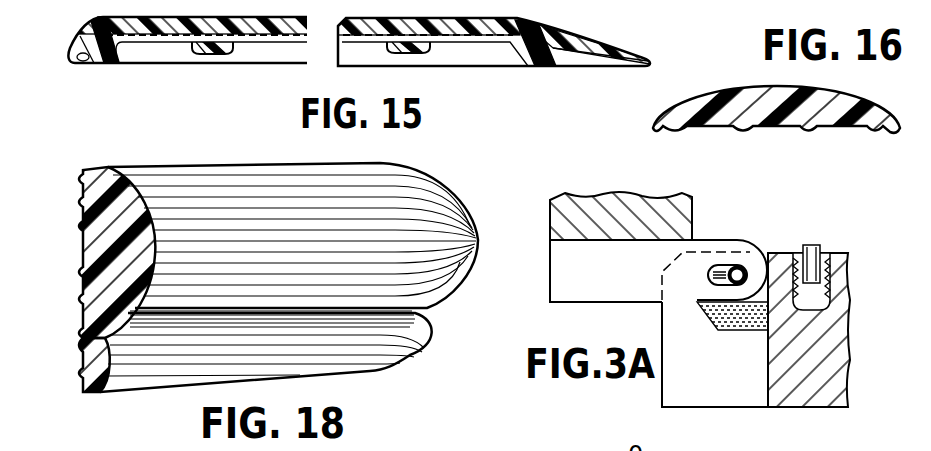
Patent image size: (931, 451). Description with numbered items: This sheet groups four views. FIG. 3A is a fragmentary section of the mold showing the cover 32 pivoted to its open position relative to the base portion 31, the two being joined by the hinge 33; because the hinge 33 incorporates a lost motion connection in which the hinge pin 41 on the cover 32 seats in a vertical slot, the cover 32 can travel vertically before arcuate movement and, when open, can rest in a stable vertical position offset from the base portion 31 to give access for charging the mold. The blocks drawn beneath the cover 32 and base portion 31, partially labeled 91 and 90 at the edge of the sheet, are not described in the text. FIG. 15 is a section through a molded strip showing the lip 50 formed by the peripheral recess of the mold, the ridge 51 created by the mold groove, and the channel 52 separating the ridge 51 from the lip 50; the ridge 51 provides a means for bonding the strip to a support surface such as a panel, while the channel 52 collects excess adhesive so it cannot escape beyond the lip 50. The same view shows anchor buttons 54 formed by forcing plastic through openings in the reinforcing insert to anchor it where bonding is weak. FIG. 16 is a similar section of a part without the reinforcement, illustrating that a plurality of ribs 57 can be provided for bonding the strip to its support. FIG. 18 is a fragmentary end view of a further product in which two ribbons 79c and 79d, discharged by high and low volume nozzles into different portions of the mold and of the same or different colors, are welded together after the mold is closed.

In FIG. 15, the lip 50 is at (72, 63).
In FIG. 15, the ridge 51 is at (106, 64).
In FIG. 15, the channel 52 is at (79, 65).
In FIG. 15, the anchor buttons 54 is at (222, 54).
In FIG. 16, the ribs 57 is at (818, 135).
In FIG. 18, the ribbon 79c is at (92, 230).
In FIG. 18, the ribbon 79d is at (92, 362).
In FIG. 3A, the cover 32 is at (628, 192).
In FIG. 3A, the hinge 33 is at (724, 236).
In FIG. 3A, the hinge pin 41 is at (742, 268).
In FIG. 3A, the base portion 31 is at (833, 253).
In FIG. 3A, the lower block 91 is at (755, 376).
In FIG. 3A, the support block 90 is at (812, 352).